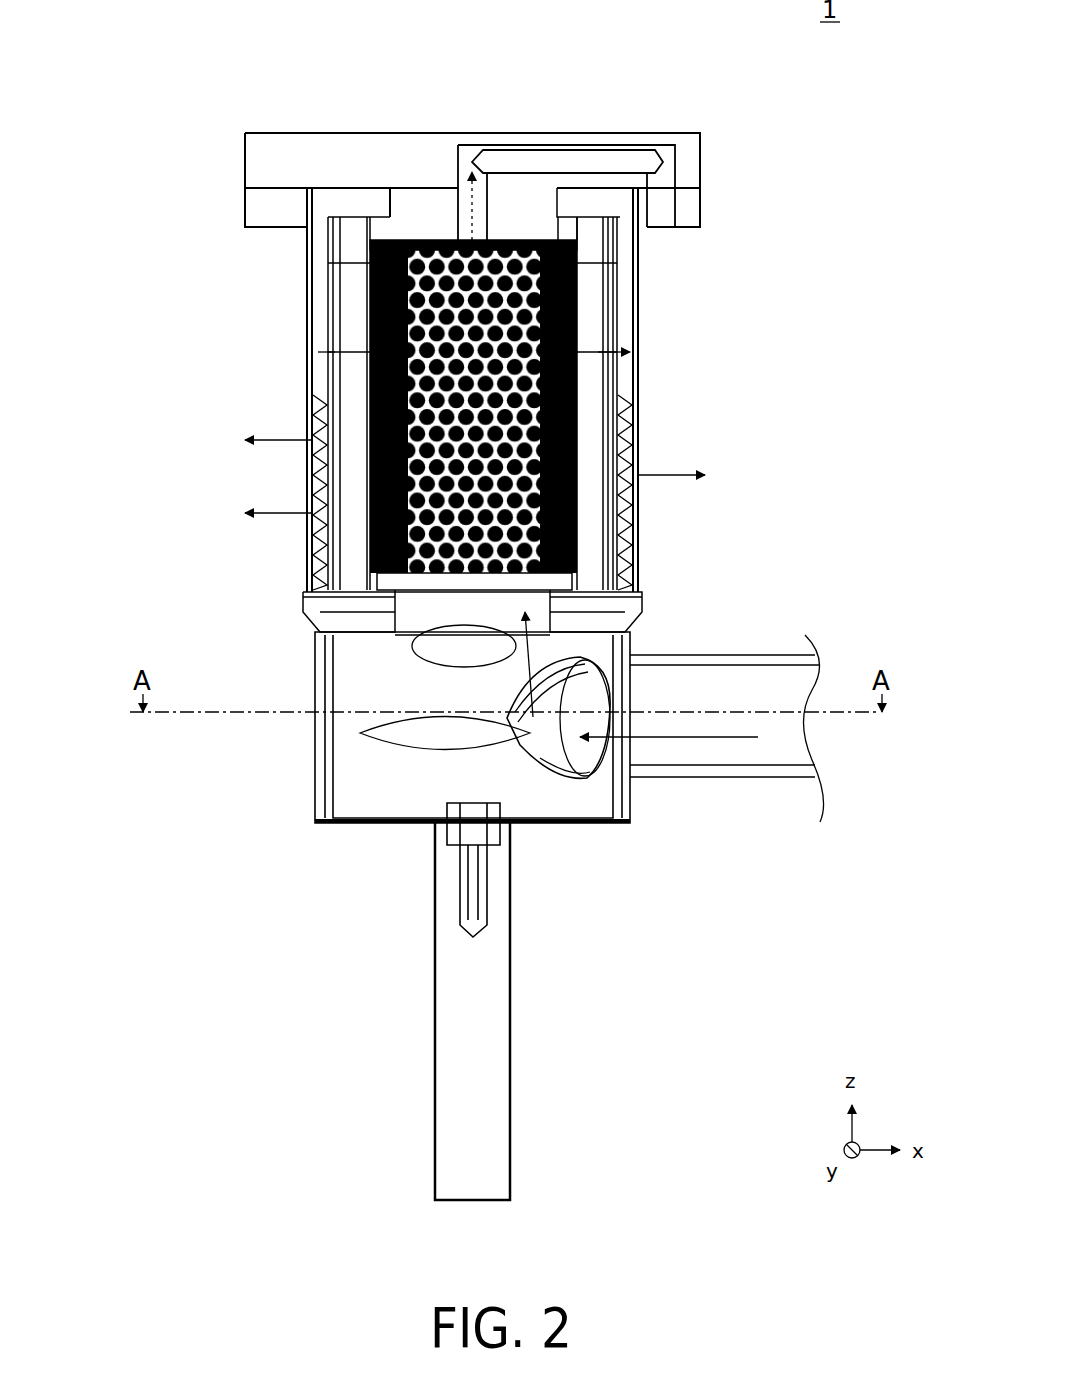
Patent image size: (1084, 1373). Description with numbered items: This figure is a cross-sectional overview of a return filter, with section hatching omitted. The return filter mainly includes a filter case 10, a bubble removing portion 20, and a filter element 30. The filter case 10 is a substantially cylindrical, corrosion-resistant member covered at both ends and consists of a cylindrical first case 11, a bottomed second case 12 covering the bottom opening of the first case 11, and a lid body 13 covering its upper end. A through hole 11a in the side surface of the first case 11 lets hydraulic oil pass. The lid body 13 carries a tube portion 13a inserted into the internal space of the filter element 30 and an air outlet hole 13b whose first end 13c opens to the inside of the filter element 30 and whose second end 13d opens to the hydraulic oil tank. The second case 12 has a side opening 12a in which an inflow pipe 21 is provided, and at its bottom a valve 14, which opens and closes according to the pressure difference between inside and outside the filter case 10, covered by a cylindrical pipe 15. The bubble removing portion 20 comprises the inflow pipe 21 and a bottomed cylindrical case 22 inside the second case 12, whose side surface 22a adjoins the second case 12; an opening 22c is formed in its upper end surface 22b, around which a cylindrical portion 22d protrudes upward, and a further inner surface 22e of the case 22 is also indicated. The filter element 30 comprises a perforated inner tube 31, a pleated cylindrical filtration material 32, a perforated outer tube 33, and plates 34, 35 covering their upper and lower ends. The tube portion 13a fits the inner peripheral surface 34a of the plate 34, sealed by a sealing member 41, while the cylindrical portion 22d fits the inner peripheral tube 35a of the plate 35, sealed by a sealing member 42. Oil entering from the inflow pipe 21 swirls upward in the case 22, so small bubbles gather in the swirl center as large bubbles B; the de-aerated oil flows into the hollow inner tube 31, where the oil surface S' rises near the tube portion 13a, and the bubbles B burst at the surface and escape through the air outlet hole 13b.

The filter case 10 is at (805, 382).
The first case 11 is at (642, 352).
The through hole 11a is at (638, 440).
The second case 12 is at (600, 640).
The opening 12a is at (600, 675).
The lid body 13 is at (688, 152).
The tube portion 13a is at (420, 215).
The air outlet hole 13b is at (535, 150).
The first end 13c is at (482, 238).
The second end 13d is at (665, 228).
The valve 14 is at (436, 840).
The cylindrical pipe 15 is at (436, 932).
The bubble removing portion 20 is at (820, 938).
The inflow pipe 21 is at (760, 790).
The case 22 is at (725, 955).
The side surface 22a is at (640, 808).
The upper end surface 22b is at (358, 640).
The opening 22c is at (470, 660).
The cylindrical portion 22d is at (408, 648).
The housing opening 22e is at (513, 632).
The filter element 30 is at (150, 440).
The inner tube 31 is at (312, 440).
The filtration material 32 is at (326, 388).
The outer tube 33 is at (328, 352).
The plate 34 is at (325, 238).
The inner peripheral surface 34a is at (370, 268).
The plate 35 is at (300, 592).
The inner peripheral tube 35a is at (318, 562).
The sealing member 41 is at (635, 240).
The sealing member 42 is at (305, 608).
The oil surface S' is at (318, 165).
The bubbles B is at (455, 600).